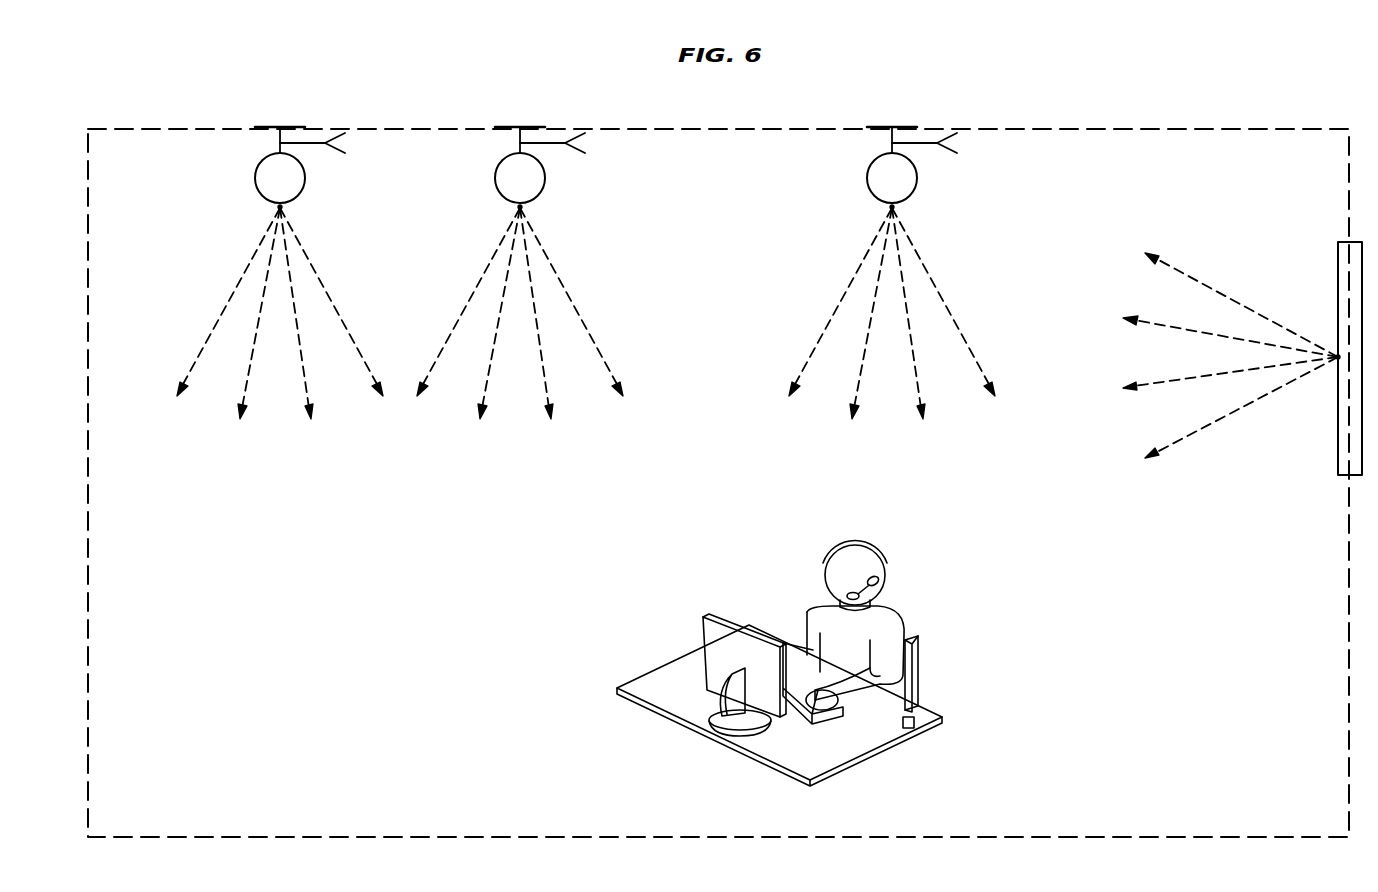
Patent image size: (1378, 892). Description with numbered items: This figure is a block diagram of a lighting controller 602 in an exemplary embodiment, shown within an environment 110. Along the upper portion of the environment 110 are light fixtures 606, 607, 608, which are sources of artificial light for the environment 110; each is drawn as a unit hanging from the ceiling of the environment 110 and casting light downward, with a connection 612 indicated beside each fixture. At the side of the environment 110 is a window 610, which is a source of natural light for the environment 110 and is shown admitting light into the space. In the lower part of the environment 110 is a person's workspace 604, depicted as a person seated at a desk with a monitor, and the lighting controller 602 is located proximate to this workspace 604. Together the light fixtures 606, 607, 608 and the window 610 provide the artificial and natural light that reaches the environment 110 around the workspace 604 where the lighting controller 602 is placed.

The environment 110 is at (118, 128).
The lighting controller 602 is at (918, 718).
The person's workspace 604 is at (655, 630).
The light fixture 606 is at (255, 176).
The light fixture 607 is at (495, 180).
The light fixture 608 is at (869, 190).
The window 610 is at (1338, 262).
The sensor mount / communication link 612 is at (318, 148).